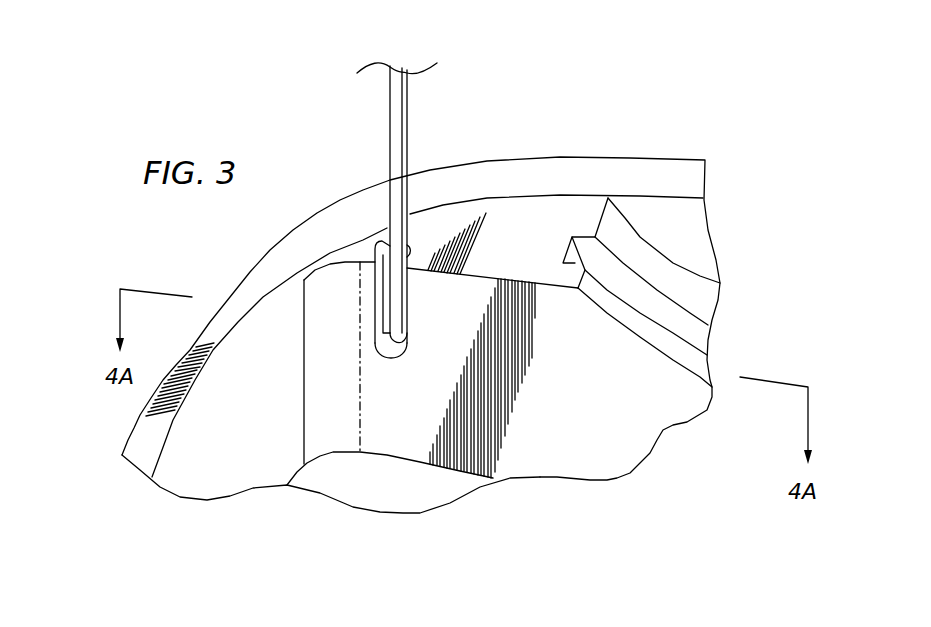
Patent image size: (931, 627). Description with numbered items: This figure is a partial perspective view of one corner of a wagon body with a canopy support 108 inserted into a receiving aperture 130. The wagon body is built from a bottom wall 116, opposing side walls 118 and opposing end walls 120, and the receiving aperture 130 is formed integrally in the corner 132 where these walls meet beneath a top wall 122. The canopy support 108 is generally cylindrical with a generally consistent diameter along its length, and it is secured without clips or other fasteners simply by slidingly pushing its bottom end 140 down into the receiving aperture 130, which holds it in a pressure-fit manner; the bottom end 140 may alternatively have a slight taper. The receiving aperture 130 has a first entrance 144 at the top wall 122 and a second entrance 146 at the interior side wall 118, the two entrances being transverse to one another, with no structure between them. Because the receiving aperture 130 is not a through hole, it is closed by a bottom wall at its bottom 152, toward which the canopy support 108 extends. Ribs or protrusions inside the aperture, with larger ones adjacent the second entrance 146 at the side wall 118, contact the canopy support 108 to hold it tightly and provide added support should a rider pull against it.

The canopy support 108 is at (408, 122).
The bottom wall 116 is at (425, 500).
The side wall 118 is at (683, 170).
The end wall 120 is at (148, 437).
The top wall 122 is at (423, 240).
The receiving aperture 130 is at (388, 240).
The corner 132 is at (340, 213).
The bottom end 140 is at (395, 325).
The first entrance 144 is at (383, 250).
The second entrance 146 is at (378, 310).
The bottom 152 is at (385, 350).